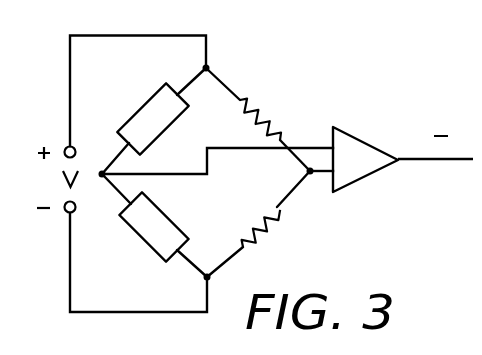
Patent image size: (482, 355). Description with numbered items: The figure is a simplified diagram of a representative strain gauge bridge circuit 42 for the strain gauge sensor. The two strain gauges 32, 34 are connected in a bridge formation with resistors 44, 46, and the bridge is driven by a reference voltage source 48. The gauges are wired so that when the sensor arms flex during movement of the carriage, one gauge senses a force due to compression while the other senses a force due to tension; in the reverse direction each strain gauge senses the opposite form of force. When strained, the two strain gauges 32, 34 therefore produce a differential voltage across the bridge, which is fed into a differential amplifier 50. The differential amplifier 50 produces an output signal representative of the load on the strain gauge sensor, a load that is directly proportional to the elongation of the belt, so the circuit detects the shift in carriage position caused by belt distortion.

The strain gauge 32 is at (137, 108).
The strain gauge 34 is at (150, 249).
The strain gauge bridge circuit 42 is at (320, 87).
The resistor 44 is at (262, 116).
The resistor 46 is at (272, 218).
The reference voltage source 48 is at (37, 183).
The differential amplifier 50 is at (368, 142).